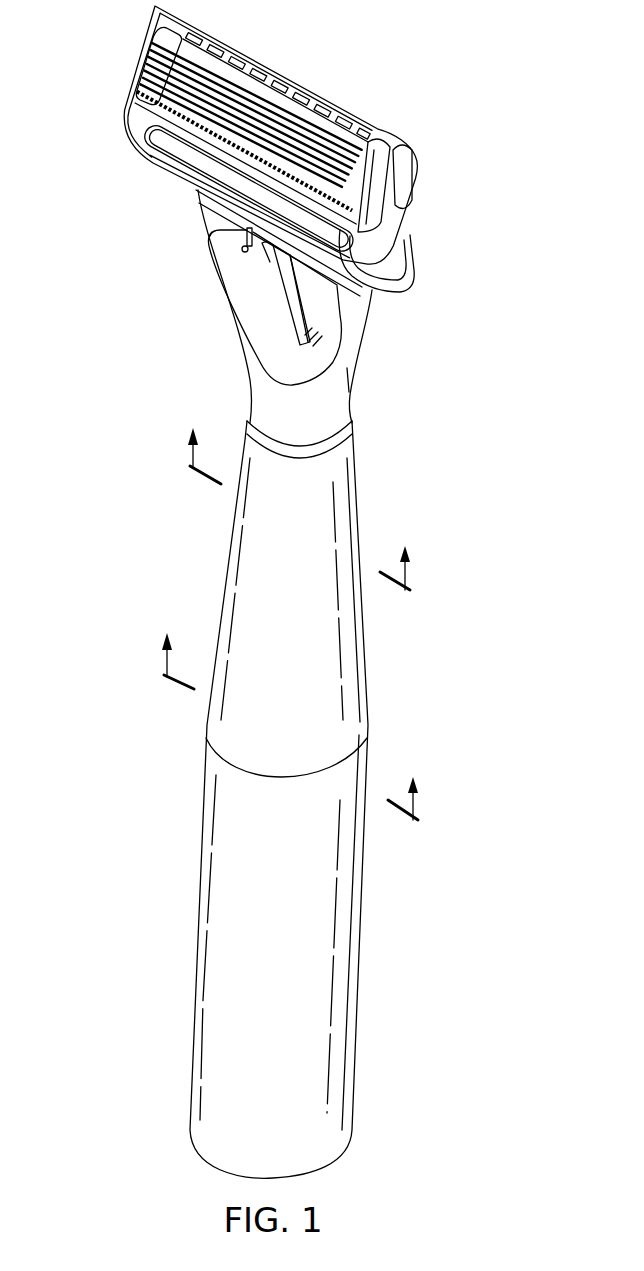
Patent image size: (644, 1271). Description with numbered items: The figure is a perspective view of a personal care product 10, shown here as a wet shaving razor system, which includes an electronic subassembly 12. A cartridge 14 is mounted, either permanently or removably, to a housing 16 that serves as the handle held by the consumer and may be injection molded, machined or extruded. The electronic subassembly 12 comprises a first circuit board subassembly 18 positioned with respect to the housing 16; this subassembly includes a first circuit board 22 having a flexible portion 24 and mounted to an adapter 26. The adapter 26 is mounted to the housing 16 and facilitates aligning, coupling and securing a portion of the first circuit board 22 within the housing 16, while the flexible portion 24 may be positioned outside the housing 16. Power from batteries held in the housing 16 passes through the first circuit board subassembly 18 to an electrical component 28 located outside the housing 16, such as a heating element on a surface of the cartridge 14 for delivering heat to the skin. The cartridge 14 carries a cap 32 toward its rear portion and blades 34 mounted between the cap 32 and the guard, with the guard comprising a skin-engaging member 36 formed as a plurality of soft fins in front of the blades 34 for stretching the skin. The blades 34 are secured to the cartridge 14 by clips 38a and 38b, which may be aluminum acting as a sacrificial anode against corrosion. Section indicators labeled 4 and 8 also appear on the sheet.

The personal care product 10 is at (530, 72).
The electronic subassembly 12 is at (200, 288).
The cartridge 14 is at (436, 150).
The housing 16 is at (134, 130).
The first circuit board subassembly 18 is at (316, 306).
The first circuit board 22 is at (262, 318).
The flexible portion 24 is at (283, 292).
The adapter 26 is at (368, 420).
The electrical component 28 is at (168, 158).
The cap 32 is at (280, 94).
The blades 34 is at (297, 137).
The skin-engaging member 36 is at (397, 265).
The clip 38a is at (392, 196).
The clip 38b is at (143, 64).
The section line 4- 4 is at (290, 711).
The section line 8- 8 is at (299, 492).